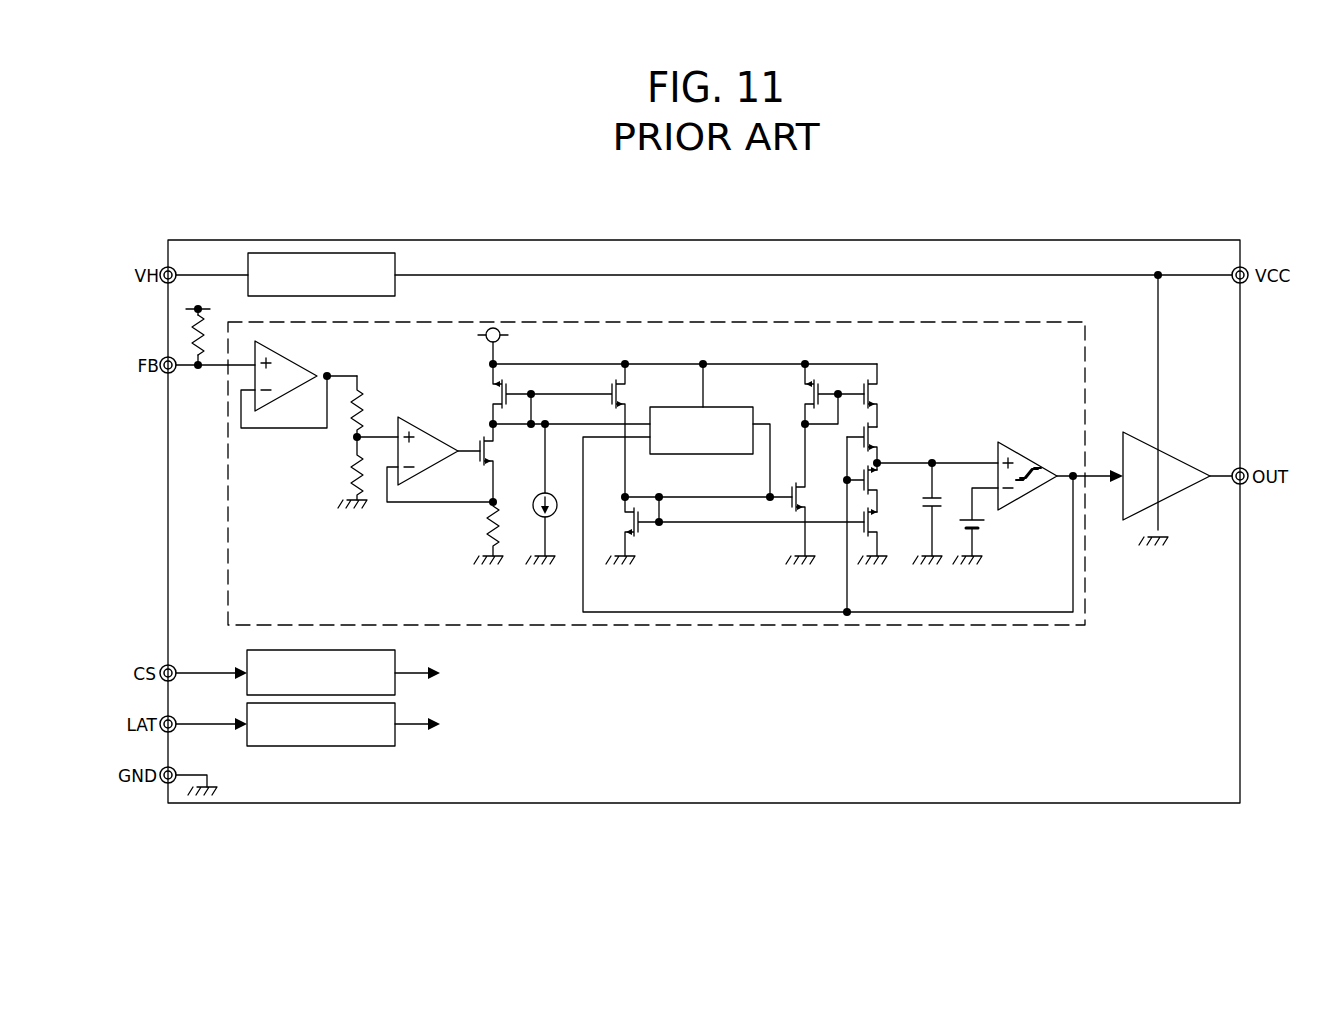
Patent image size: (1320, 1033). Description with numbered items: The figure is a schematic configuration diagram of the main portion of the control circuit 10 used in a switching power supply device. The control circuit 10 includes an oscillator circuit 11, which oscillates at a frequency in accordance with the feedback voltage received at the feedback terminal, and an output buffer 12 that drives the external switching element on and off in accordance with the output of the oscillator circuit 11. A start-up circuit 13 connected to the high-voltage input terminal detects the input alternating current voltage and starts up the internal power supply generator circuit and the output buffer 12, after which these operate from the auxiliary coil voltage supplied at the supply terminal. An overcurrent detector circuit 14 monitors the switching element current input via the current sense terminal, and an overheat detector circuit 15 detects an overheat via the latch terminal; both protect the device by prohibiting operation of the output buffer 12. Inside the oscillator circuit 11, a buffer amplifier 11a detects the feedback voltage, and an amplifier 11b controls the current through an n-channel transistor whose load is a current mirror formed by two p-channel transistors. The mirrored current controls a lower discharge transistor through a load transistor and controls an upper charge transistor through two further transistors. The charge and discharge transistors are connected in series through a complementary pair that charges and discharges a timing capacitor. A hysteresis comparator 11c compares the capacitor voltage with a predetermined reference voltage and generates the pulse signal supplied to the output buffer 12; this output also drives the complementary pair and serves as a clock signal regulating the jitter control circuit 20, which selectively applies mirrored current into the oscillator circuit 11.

The control circuit 10 is at (942, 254).
The oscillator circuit 11 is at (549, 610).
The buffer amplifier 11a is at (300, 385).
The amplifier 11b is at (428, 458).
The hysteresis comparator 11c is at (1027, 452).
The output buffer 12 is at (1180, 460).
The start-up circuit 13 is at (397, 287).
The overcurrent detector circuit 14 is at (397, 682).
The overheat detector circuit 15 is at (387, 735).
The jitter control circuit 20 is at (723, 427).